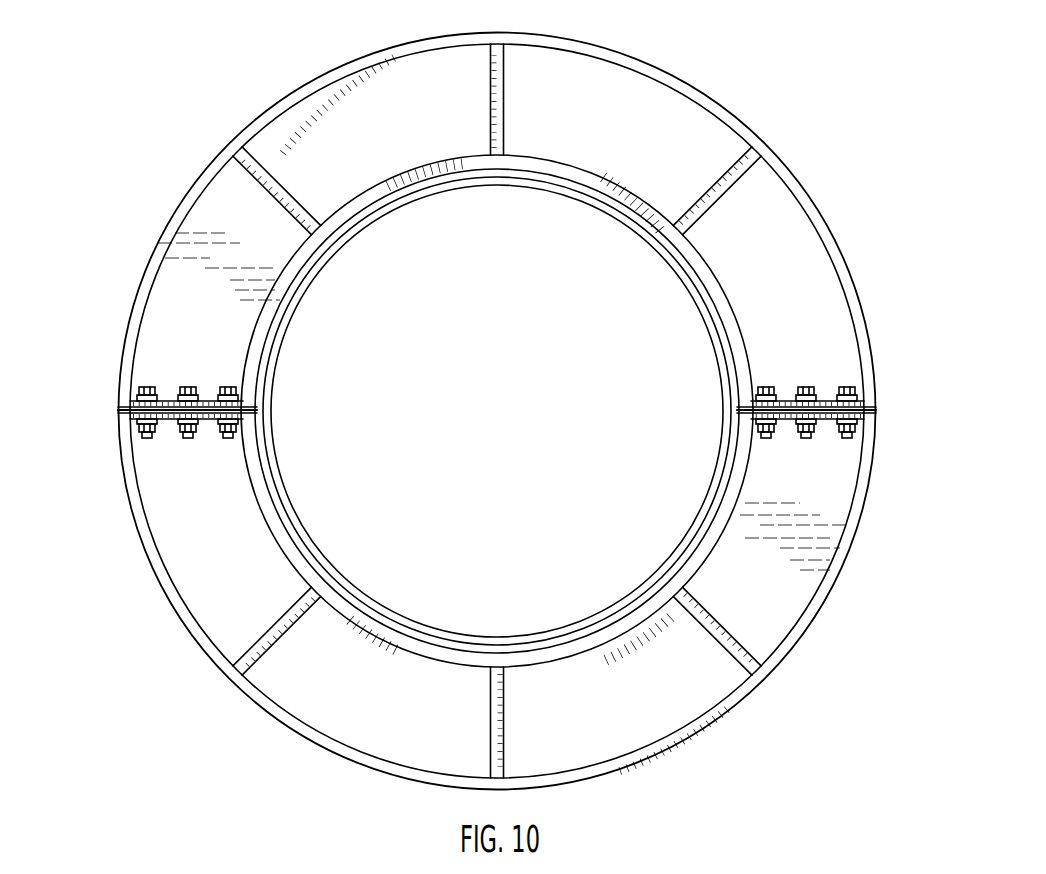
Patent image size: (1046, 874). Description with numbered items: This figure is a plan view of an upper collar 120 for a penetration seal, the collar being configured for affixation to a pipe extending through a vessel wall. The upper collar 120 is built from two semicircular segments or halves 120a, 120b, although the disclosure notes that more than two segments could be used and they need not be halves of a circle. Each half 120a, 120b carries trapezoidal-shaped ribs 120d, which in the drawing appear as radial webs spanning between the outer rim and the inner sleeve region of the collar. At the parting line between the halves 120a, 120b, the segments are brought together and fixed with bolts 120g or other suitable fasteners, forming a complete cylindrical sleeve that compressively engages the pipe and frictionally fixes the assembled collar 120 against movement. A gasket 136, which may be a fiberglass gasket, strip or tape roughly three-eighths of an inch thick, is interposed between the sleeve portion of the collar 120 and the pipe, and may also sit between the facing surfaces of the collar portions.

The upper collar 120 is at (795, 30).
The semicircular segment 120a is at (345, 64).
The semicircular segment 120b is at (627, 770).
The trapezoidal-shaped ribs 120d is at (738, 180).
The bolts 120g is at (148, 387).
The gasket 136 is at (697, 311).